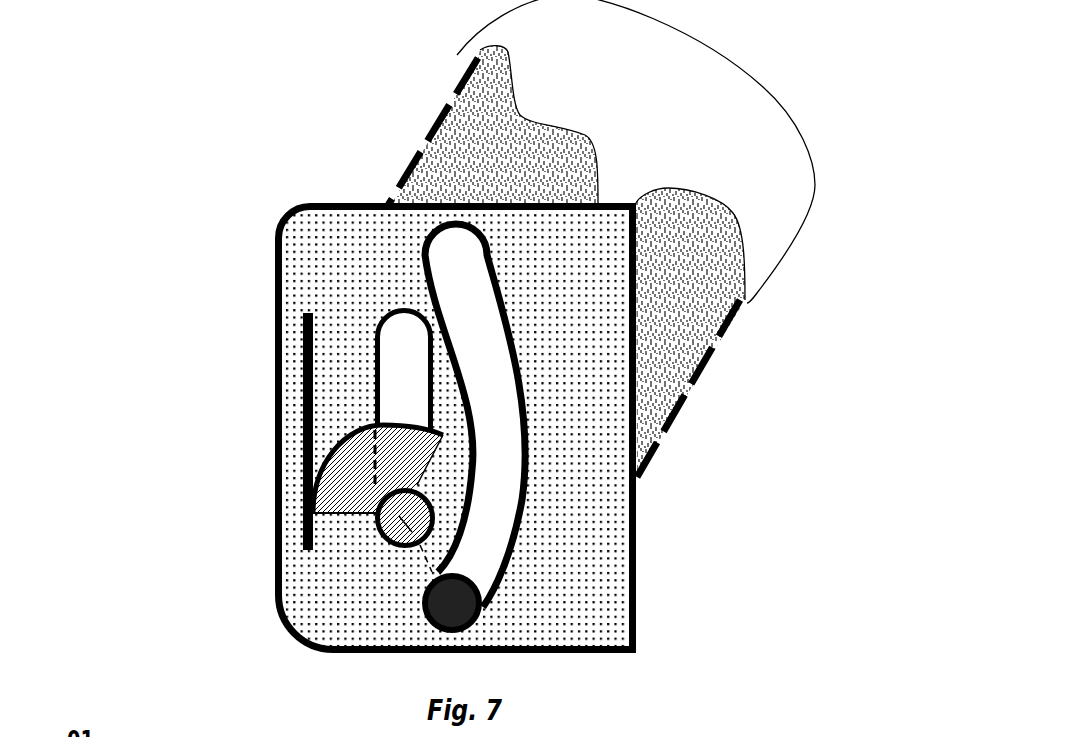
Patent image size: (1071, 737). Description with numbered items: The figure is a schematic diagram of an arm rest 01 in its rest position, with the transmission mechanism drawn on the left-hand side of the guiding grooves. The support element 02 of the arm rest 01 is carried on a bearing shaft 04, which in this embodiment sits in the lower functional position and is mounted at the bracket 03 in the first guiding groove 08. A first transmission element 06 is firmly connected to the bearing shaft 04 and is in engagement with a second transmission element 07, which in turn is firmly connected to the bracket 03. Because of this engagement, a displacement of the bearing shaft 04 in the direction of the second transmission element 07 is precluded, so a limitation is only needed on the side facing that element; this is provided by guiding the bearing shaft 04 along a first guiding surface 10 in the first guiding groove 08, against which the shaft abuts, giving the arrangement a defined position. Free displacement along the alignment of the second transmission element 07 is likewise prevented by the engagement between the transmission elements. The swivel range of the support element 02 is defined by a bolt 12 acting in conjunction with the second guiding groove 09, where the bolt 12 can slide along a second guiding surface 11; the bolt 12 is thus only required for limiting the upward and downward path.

The arm rest 01 is at (158, 189).
The support element 02 is at (462, 148).
The bracket 03 is at (588, 602).
The bearing shaft 04 is at (383, 533).
The first transmission element 06 is at (355, 502).
The second transmission element 07 is at (315, 377).
The first guiding groove 08 is at (402, 357).
The second guiding groove 09 is at (487, 522).
The first guiding surface 10 is at (433, 387).
The second guiding surface 11 is at (522, 447).
The bolt 12 is at (482, 605).